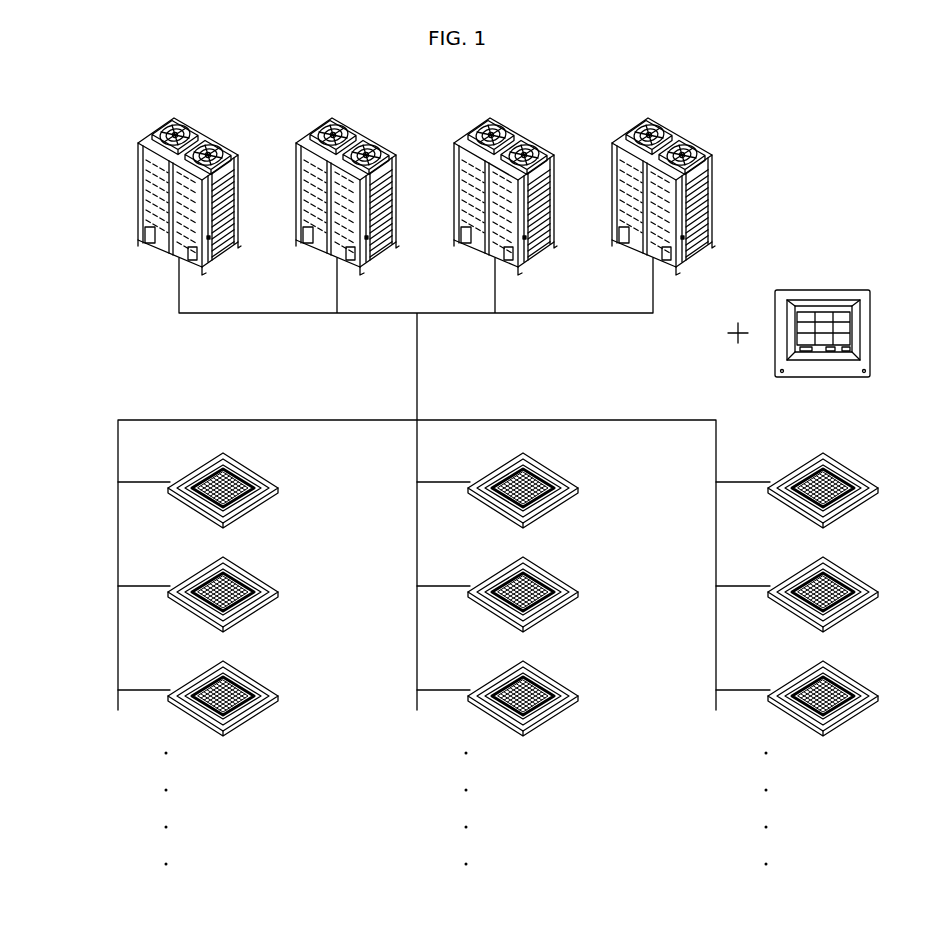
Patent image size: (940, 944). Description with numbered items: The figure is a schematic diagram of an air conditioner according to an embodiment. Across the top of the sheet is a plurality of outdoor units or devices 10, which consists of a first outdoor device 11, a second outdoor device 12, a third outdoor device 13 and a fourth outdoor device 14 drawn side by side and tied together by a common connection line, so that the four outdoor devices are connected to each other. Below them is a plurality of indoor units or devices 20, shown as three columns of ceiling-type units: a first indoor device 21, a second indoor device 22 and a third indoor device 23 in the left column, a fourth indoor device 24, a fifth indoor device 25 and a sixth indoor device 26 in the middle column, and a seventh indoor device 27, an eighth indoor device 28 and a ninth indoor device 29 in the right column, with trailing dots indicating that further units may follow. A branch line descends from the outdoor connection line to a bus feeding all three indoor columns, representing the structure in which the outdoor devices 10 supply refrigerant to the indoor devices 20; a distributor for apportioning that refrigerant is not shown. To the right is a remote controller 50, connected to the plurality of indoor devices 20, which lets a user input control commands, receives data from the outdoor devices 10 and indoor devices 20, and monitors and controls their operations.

The plurality of outdoor units 10 is at (73, 163).
The first outdoor device 11 is at (218, 143).
The second outdoor device 12 is at (376, 143).
The third outdoor device 13 is at (534, 143).
The fourth outdoor device 14 is at (692, 143).
The plurality of indoor units 20 is at (90, 432).
The first indoor device 21 is at (263, 470).
The second indoor device 22 is at (263, 574).
The third indoor device 23 is at (263, 678).
The fourth indoor device 24 is at (563, 470).
The fifth indoor device 25 is at (563, 574).
The sixth indoor device 26 is at (563, 678).
The seventh indoor device 27 is at (863, 470).
The eighth indoor device 28 is at (863, 574).
The ninth indoor device 29 is at (863, 678).
The remote controller 50 is at (856, 291).